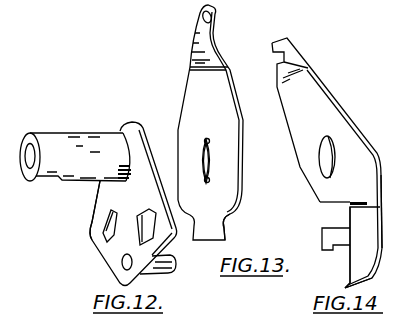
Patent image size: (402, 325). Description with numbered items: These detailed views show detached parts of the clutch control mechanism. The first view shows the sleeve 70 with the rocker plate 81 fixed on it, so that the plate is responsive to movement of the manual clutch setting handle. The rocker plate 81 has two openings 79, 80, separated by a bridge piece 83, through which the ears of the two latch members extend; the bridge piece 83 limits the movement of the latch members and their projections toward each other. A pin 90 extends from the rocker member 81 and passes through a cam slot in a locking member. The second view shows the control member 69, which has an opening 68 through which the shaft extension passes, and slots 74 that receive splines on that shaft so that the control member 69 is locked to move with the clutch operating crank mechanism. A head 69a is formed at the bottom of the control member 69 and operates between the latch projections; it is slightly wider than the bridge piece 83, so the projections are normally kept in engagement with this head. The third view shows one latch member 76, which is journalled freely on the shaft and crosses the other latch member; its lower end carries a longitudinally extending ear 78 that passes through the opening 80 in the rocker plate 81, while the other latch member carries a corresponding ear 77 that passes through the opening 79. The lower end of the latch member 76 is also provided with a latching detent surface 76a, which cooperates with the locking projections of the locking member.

In FIG. 12, the sleeve 70 is at (80, 132).
In FIG. 12, the opening 80 is at (167, 247).
In FIG. 12, the rocker plate 81 is at (91, 218).
In FIG. 12, the opening 79 is at (122, 241).
In FIG. 12, the bridge piece 83 is at (115, 232).
In FIG. 12, the pin 90 is at (166, 276).
In FIG. 13, the control member 69 is at (228, 97).
In FIG. 13, the slots 74 is at (205, 140).
In FIG. 13, the opening 68 is at (209, 146).
In FIG. 13, the head 69a is at (227, 233).
In FIG. 14, the latch member 76 is at (330, 102).
In FIG. 14, the ear 78 is at (323, 237).
In FIG. 14, the latching detent surface 76a is at (344, 283).
In FIG. 14, the ear 77 is at (391, 220).